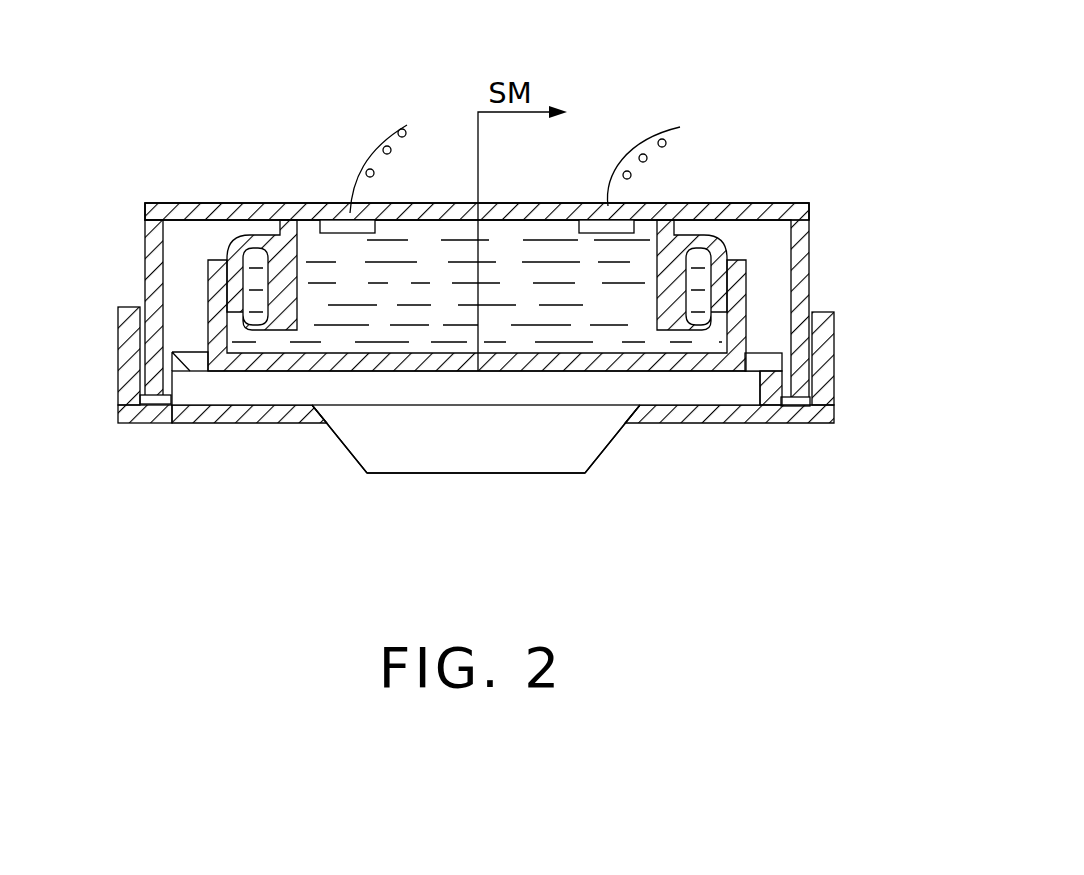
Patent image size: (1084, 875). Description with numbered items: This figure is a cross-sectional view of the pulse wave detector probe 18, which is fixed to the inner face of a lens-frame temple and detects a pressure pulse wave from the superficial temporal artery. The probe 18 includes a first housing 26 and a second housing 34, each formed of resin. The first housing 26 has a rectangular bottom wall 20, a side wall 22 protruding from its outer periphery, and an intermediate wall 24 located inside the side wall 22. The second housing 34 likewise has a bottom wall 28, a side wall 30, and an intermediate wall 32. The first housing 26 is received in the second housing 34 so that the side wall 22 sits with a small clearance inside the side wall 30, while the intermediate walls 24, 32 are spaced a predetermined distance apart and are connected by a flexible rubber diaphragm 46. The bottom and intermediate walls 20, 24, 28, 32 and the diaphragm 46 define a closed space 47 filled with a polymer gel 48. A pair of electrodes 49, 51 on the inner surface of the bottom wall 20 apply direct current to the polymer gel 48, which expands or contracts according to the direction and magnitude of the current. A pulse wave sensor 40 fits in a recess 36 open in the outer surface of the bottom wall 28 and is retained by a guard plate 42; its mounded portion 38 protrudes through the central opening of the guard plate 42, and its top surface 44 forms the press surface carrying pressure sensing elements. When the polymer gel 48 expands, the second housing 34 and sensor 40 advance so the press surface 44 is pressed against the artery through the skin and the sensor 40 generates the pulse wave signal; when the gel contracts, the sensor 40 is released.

The pulse wave detector probe 18 is at (816, 106).
The bottom wall 20 is at (208, 212).
The side wall 22 is at (153, 268).
The intermediate wall 24 is at (670, 220).
The first housing 26 is at (815, 196).
The bottom wall 28 is at (152, 415).
The side wall 30 is at (130, 360).
The intermediate wall 32 is at (737, 297).
The second housing 34 is at (840, 430).
The recess 36 is at (203, 372).
The mounded portion 38 is at (442, 450).
The pulse wave sensor 40 is at (590, 480).
The guard plate 42 is at (690, 413).
The top surface 44 is at (492, 475).
The flexible diaphragm 46 is at (268, 252).
The closed space 47 is at (366, 291).
The polymer gel 48 is at (507, 250).
The electrode 49 is at (344, 221).
The electrode 51 is at (590, 221).